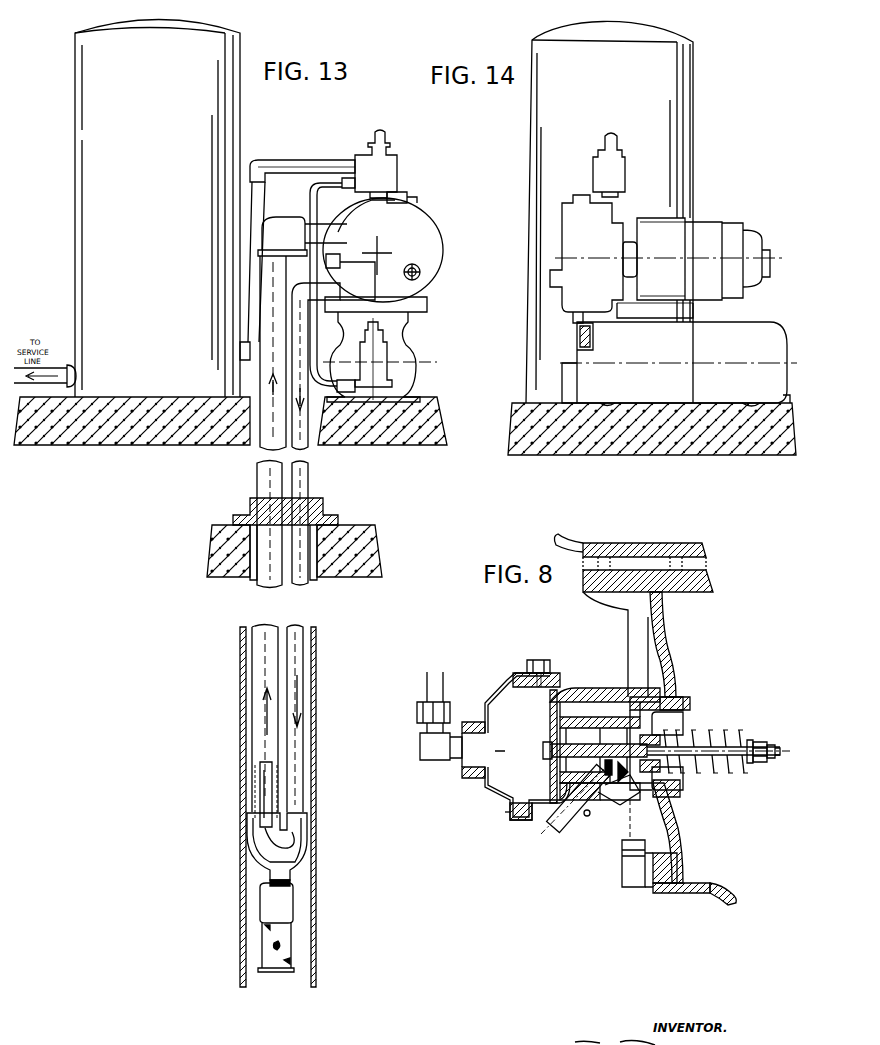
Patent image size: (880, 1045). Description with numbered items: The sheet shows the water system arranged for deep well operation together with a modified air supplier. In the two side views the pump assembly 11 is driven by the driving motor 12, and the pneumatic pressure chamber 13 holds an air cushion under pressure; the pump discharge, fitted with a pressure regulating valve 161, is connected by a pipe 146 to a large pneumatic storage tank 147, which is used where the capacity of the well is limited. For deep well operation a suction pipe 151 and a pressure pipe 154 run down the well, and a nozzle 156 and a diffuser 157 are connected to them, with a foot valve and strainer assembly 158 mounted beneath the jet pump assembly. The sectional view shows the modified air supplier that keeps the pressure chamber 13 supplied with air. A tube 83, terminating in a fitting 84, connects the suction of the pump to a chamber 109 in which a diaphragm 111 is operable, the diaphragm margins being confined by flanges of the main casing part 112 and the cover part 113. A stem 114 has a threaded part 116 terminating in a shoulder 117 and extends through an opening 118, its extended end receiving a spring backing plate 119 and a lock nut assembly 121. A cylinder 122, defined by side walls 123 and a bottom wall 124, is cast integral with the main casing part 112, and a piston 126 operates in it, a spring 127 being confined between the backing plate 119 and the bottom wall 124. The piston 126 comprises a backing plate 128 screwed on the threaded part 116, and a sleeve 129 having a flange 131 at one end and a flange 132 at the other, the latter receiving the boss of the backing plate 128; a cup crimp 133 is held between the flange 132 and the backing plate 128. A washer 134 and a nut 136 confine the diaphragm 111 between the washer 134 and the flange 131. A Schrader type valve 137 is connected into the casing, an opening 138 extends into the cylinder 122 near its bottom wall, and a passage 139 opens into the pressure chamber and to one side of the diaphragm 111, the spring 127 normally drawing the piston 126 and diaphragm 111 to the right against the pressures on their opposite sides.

In FIG. 13, the pump assembly 11 is at (383, 297).
In FIG. 14, the pump assembly 11 is at (621, 259).
In FIG. 14, the driving motor 12 is at (668, 259).
In FIG. 14, the pneumatic pressure chamber 13 is at (678, 364).
In FIG. 8, the pneumatic pressure chamber 13 is at (705, 884).
In FIG. 8, the tube 83 is at (427, 680).
In FIG. 8, the fitting 84 is at (422, 755).
In FIG. 8, the chamber 109 is at (490, 795).
In FIG. 8, the diaphragm 111 is at (505, 813).
In FIG. 8, the main casing part 112 is at (547, 672).
In FIG. 8, the cover part 113 is at (500, 688).
In FIG. 8, the stem 114 is at (722, 740).
In FIG. 8, the threaded part of stem 116 is at (572, 805).
In FIG. 8, the shoulder 117 is at (690, 745).
In FIG. 8, the opening 118 is at (668, 790).
In FIG. 8, the spring backing plate 119 is at (751, 766).
In FIG. 8, the lock nut assembly 121 is at (762, 766).
In FIG. 8, the cylinder 122 is at (600, 688).
In FIG. 8, the side walls 123 is at (606, 688).
In FIG. 8, the bottom wall 124 is at (668, 720).
In FIG. 8, the piston 126 is at (620, 805).
In FIG. 8, the spring 127 is at (752, 741).
In FIG. 8, the backing plate 128 is at (676, 806).
In FIG. 8, the sleeve 129 is at (588, 740).
In FIG. 8, the flange 131 is at (570, 790).
In FIG. 8, the flange 132 is at (630, 768).
In FIG. 8, the cup crimp 133 is at (635, 843).
In FIG. 8, the washer 134 is at (550, 722).
In FIG. 8, the nut 136 is at (543, 749).
In FIG. 8, the Schrader type valve 137 is at (584, 816).
In FIG. 8, the opening 138 is at (678, 832).
In FIG. 8, the passage 139 is at (600, 700).
In FIG. 13, the pipe 146 is at (318, 161).
In FIG. 13, the pneumatic storage tank 147 is at (157, 209).
In FIG. 14, the pneumatic storage tank 147 is at (609, 212).
In FIG. 13, the suction pipe 151 is at (252, 707).
In FIG. 13, the pressure pipe 154 is at (305, 703).
In FIG. 13, the nozzle 156 is at (302, 850).
In FIG. 13, the diffuser 157 is at (258, 765).
In FIG. 13, the foot valve and strainer assembly 158 is at (295, 904).
In FIG. 13, the pressure regulating valve 161 is at (376, 164).
In FIG. 14, the pressure regulating valve 161 is at (609, 165).